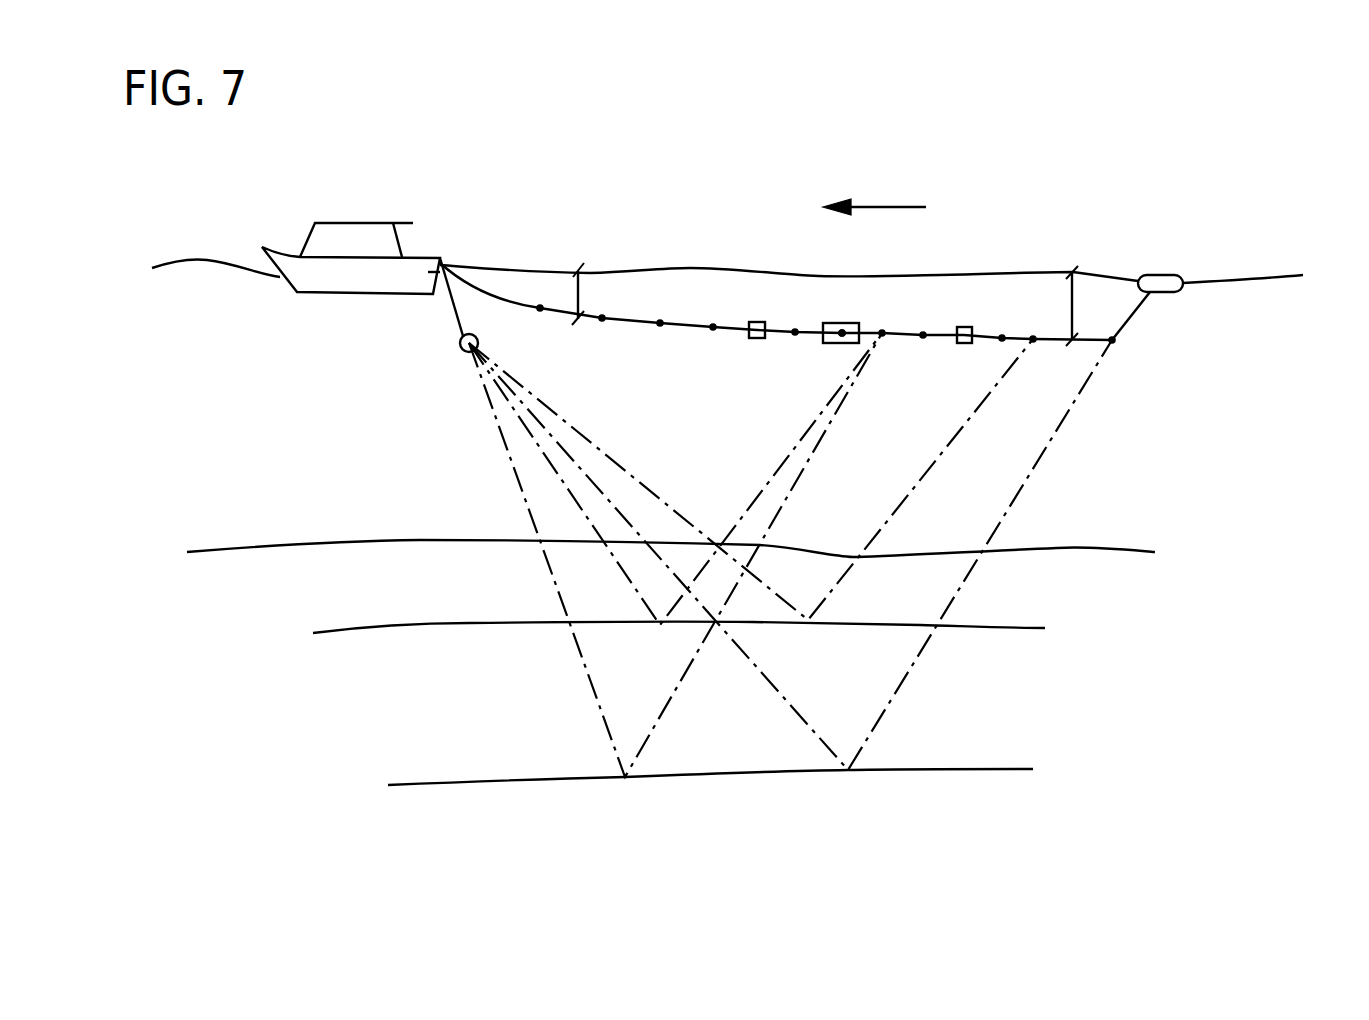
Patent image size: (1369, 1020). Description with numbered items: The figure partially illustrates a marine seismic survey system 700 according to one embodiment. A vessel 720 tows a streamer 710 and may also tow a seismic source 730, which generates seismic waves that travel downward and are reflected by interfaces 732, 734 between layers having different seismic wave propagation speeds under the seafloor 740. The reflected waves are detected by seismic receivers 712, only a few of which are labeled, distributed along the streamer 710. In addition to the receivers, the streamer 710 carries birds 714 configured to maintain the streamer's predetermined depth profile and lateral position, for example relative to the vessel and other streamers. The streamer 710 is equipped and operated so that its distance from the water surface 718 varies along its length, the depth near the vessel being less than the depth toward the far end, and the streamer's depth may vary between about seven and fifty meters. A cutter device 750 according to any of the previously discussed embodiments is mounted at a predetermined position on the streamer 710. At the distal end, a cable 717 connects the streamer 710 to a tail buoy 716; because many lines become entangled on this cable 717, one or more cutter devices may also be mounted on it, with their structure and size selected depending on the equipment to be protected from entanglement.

The marine seismic survey system 700 is at (599, 150).
The streamer 710 is at (635, 324).
The seismic receivers 712 is at (538, 315).
The birds 714 is at (758, 322).
The tail buoy 716 is at (1160, 280).
The cable 717 is at (1130, 315).
The water surface 718 is at (727, 243).
The vessel 720 is at (358, 222).
The seismic source 730 is at (459, 349).
The interface 732 is at (1005, 627).
The interface 734 is at (953, 772).
The seafloor 740 is at (1057, 547).
The cutter device 750 is at (843, 323).